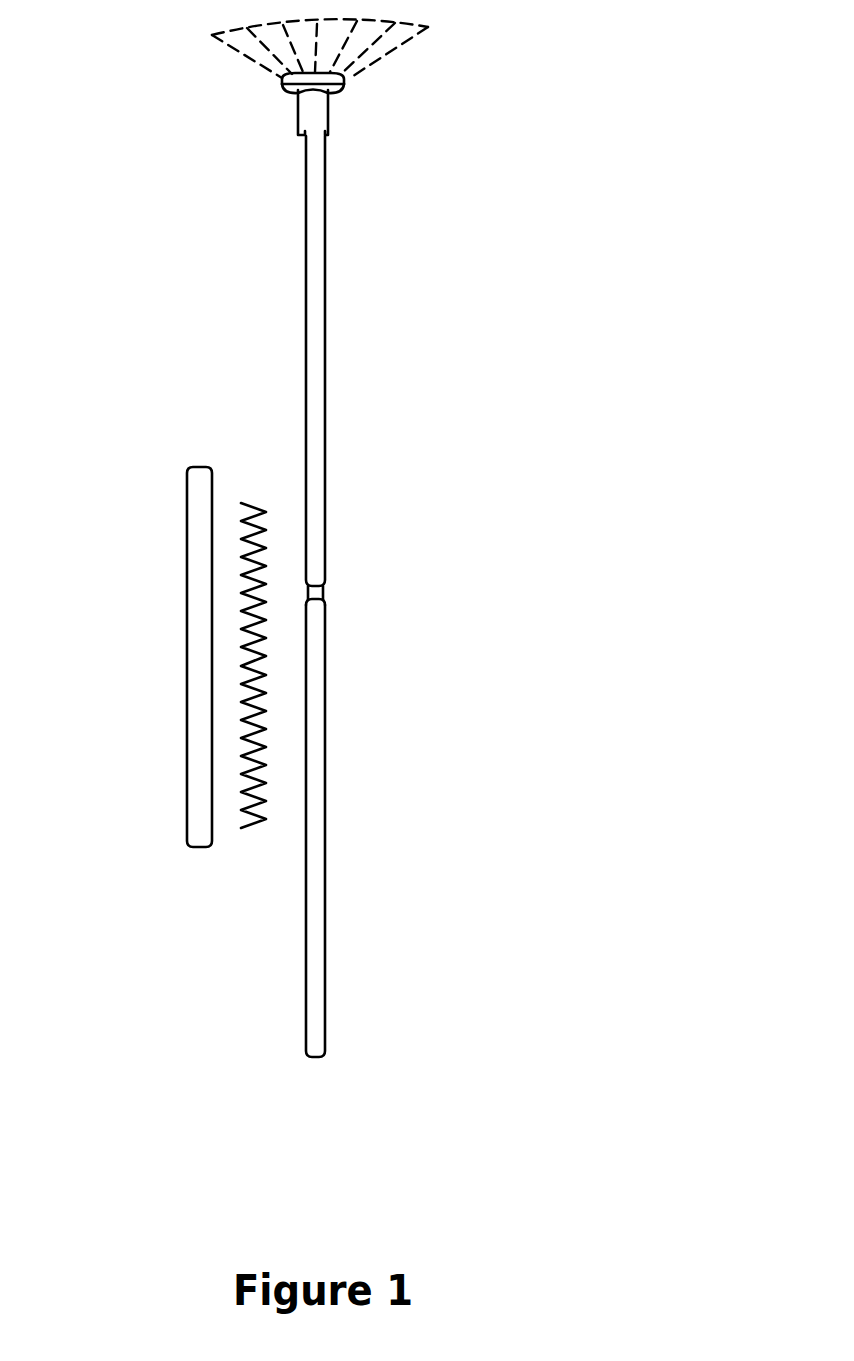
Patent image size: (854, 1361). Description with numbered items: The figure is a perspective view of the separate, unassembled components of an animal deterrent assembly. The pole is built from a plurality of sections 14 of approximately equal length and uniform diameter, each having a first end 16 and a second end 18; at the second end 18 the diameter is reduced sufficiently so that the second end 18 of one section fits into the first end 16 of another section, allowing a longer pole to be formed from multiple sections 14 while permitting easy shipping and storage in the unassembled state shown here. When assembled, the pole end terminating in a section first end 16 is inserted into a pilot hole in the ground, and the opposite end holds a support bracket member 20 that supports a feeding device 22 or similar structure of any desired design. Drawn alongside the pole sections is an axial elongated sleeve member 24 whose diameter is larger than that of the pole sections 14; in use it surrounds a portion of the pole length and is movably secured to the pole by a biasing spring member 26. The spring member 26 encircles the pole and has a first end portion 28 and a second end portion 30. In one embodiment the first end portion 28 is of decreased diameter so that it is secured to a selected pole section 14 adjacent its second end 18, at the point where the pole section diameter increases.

The section 14 is at (311, 342).
The first end 16 is at (325, 538).
The second end 18 is at (323, 163).
The support bracket member 20 is at (328, 115).
The feeding device 22 is at (402, 57).
The axial elongated sleeve member 24 is at (187, 665).
The biasing spring member 26 is at (247, 733).
The first end portion 28 is at (262, 503).
The second end portion 30 is at (253, 828).